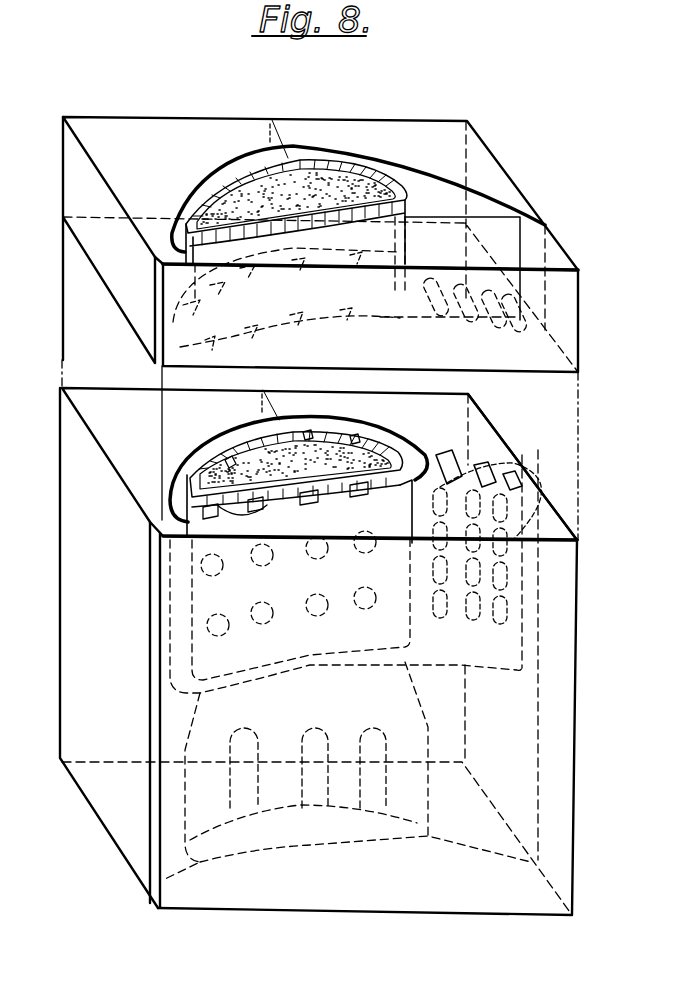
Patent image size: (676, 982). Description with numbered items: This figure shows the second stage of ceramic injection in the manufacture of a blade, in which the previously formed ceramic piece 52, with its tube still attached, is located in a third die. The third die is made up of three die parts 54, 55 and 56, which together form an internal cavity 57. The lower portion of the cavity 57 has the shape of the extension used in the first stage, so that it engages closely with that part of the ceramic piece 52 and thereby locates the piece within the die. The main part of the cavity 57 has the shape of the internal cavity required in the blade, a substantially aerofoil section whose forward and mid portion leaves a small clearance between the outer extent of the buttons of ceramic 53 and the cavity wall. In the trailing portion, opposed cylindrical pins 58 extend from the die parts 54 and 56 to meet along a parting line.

The ceramic piece 52 is at (325, 172).
The buttons of ceramic 53 is at (222, 506).
The die part 54 is at (270, 895).
The die part 55 is at (100, 790).
The die part 56 is at (478, 425).
The internal cavity 57 is at (213, 442).
The cylindrical pins 58 is at (470, 565).